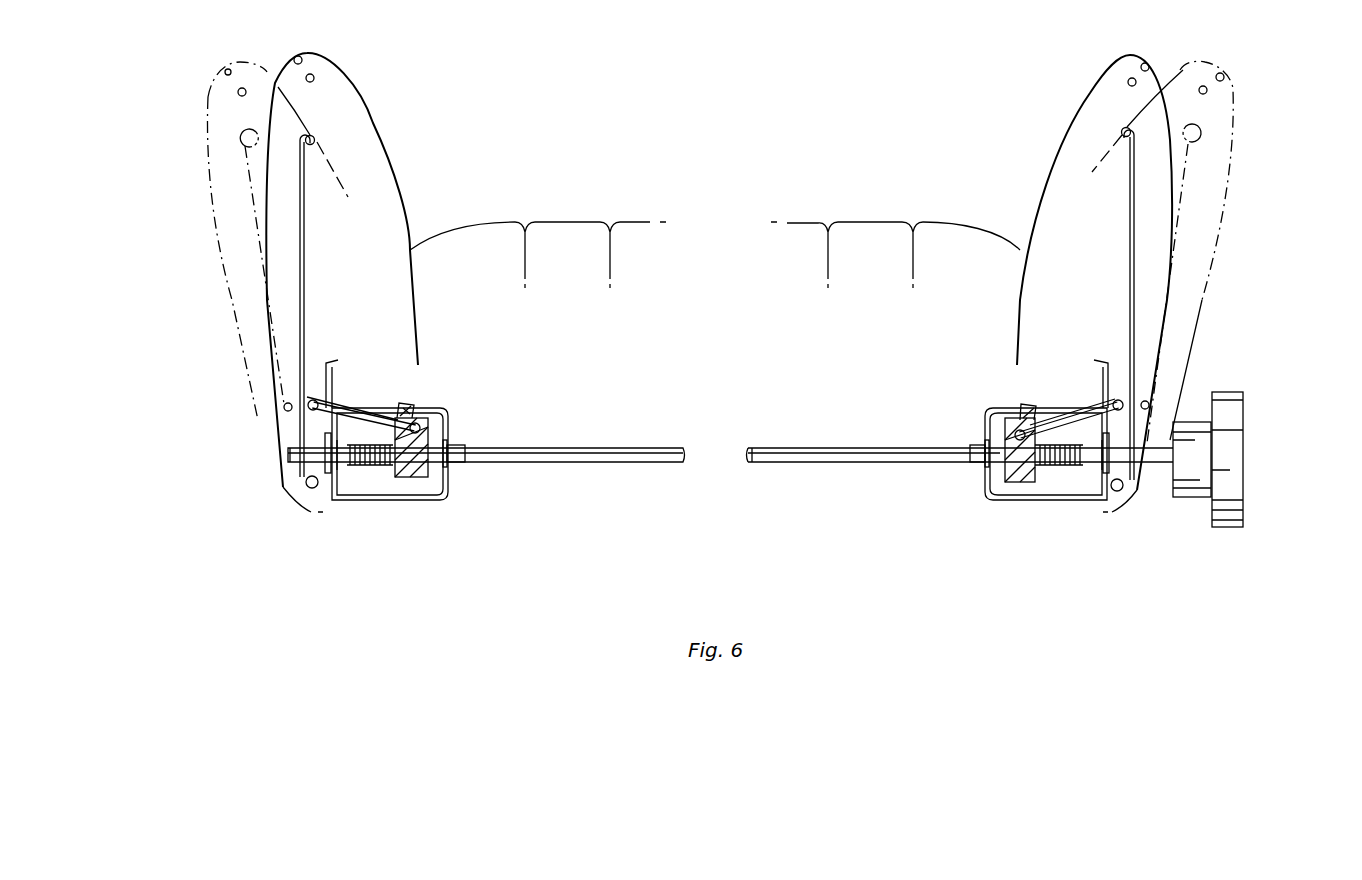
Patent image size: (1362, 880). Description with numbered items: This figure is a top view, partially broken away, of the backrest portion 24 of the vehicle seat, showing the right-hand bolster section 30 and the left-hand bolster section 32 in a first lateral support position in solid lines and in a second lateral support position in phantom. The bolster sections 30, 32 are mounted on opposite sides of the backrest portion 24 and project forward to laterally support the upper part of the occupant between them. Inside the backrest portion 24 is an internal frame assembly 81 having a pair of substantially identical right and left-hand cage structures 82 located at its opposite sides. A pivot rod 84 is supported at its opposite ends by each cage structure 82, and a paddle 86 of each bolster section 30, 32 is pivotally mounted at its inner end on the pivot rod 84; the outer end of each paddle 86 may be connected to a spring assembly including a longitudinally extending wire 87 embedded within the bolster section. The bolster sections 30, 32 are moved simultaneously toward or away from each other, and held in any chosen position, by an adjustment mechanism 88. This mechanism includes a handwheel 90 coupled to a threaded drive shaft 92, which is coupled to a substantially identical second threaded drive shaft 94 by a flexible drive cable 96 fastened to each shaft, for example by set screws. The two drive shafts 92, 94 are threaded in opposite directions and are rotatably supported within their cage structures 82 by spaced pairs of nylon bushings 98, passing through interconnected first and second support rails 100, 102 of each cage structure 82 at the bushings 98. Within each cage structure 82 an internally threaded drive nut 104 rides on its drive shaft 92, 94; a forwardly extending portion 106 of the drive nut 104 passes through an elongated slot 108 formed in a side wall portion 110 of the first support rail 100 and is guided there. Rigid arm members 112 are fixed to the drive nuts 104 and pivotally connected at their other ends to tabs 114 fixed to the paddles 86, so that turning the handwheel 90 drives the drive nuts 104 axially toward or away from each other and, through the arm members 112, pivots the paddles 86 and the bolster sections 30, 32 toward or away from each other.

The backrest portion 24 is at (850, 222).
The right-hand bolster section 30 is at (1052, 117).
The left-hand bolster section 32 is at (380, 116).
The internal frame assembly 81 is at (786, 527).
The cage structure 82 is at (438, 505).
The pivot rod 84 is at (305, 489).
The paddle 86 is at (305, 210).
The wire 87 is at (314, 136).
The adjustment mechanism 88 is at (1250, 429).
The handwheel 90 is at (1228, 392).
The threaded drive shaft 92 is at (1180, 420).
The second threaded drive shaft 94 is at (365, 410).
The flexible drive cable 96 is at (782, 447).
The nylon bushing 98 is at (337, 473).
The first support rail 100 is at (458, 410).
The second support rail 102 is at (328, 361).
The drive nut 104 is at (422, 390).
The forwardly extending portion 106 is at (389, 432).
The elongated slot 108 is at (430, 410).
The side wall portion 110 is at (358, 437).
The rigid arm member 112 is at (410, 477).
The tab 114 is at (300, 415).